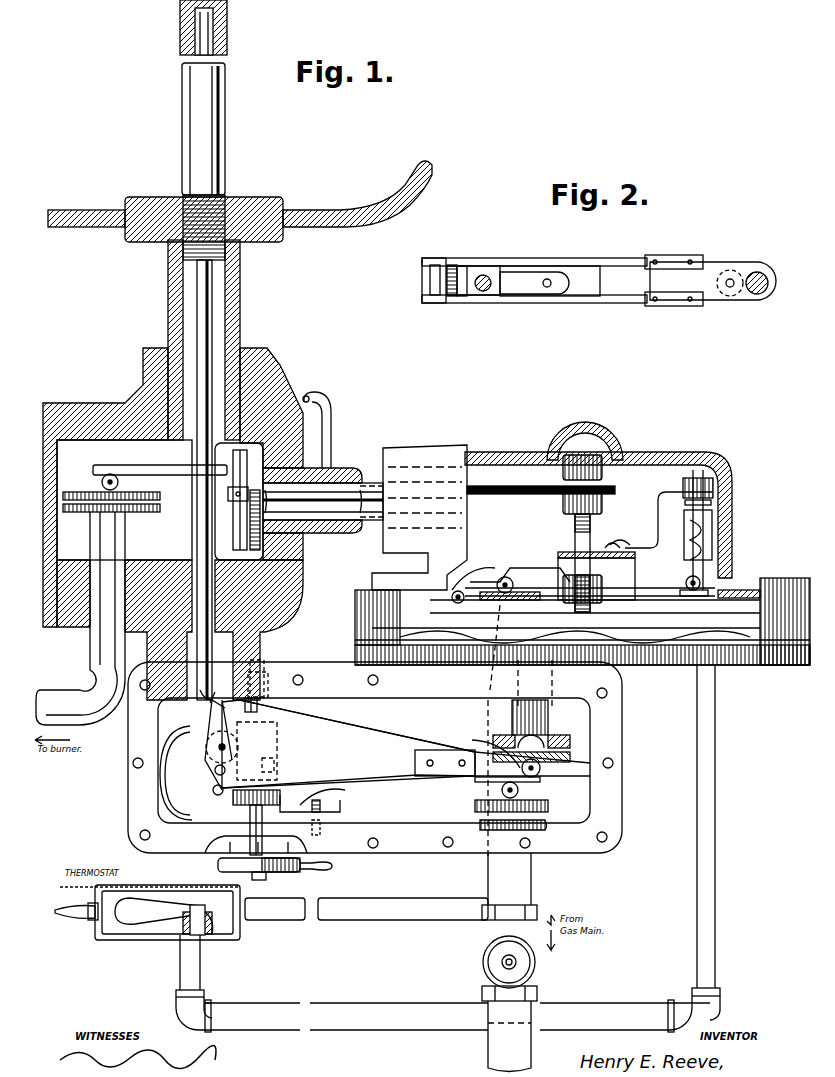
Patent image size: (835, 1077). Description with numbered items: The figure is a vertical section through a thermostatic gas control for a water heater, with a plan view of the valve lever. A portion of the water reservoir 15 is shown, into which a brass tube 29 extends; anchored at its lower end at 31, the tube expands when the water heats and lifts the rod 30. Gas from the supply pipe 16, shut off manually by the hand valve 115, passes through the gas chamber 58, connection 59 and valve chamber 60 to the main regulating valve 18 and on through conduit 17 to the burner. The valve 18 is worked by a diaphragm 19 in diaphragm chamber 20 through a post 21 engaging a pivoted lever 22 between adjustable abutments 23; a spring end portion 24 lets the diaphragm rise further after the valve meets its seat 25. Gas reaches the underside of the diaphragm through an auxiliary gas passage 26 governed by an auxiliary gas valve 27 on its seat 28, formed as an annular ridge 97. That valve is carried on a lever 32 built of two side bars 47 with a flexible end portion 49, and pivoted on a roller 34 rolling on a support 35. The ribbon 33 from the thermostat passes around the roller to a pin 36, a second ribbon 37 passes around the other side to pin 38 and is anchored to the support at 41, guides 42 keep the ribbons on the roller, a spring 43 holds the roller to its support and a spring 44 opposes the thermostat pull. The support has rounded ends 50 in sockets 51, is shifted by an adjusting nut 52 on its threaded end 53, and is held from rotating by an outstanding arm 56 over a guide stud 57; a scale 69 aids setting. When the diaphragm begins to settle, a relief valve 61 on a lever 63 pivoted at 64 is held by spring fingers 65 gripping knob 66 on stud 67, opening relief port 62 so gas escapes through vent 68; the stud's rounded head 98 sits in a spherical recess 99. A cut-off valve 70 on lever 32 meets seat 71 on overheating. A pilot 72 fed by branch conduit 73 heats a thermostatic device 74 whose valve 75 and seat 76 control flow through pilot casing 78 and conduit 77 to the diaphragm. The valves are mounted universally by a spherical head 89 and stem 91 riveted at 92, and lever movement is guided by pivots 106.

In FIG. 1, the water chamber or reservoir 15 is at (410, 185).
In FIG. 1, the gas supply pipe 16 is at (490, 1043).
In FIG. 1, the conduit to main burner 17 is at (90, 668).
In FIG. 1, the main regulating valve 18 is at (88, 495).
In FIG. 1, the diaphragm 19 is at (745, 630).
In FIG. 1, the diaphragm chamber 20 is at (640, 640).
In FIG. 1, the post 21 is at (575, 535).
In FIG. 1, the pivoted lever 22 is at (485, 486).
In FIG. 1, the adjustable abutments 23 is at (604, 475).
In FIG. 1, the spring end portion 24 is at (555, 458).
In FIG. 1, the valve seat 25 is at (160, 500).
In FIG. 1, the auxiliary gas passage 26 is at (525, 733).
In FIG. 1, the auxiliary gas valve 27 is at (545, 770).
In FIG. 1, the valve seat 28 is at (560, 735).
In FIG. 1, the tube 29 is at (190, 105).
In FIG. 1, the rod 30 is at (227, 40).
In FIG. 1, the anchorage 31 is at (225, 195).
In FIG. 1, the arm or lever 32 is at (310, 745).
In FIG. 2, the arm or lever 32 is at (520, 262).
In FIG. 1, the metallic tape or ribbon 33 is at (215, 705).
In FIG. 1, the roller 34 is at (226, 747).
In FIG. 2, the roller 34 is at (422, 284).
In FIG. 1, the support 35 is at (275, 760).
In FIG. 2, the support 35 is at (472, 275).
In FIG. 1, the pin 36 is at (215, 790).
In FIG. 1, the ribbon 37 is at (240, 770).
In FIG. 1, the pin 38 is at (262, 672).
In FIG. 2, the pin 38 is at (450, 296).
In FIG. 1, the ribbon anchorage 41 is at (235, 800).
In FIG. 1, the guides 42 is at (215, 770).
In FIG. 1, the spring 43 is at (165, 780).
In FIG. 1, the spring 44 is at (375, 757).
In FIG. 2, the side bars 47 is at (612, 258).
In FIG. 1, the flexible end portion 49 is at (485, 783).
In FIG. 2, the flexible end portion 49 is at (690, 298).
In FIG. 1, the rounded ends 50 is at (262, 707).
In FIG. 2, the rounded ends 50 is at (483, 292).
In FIG. 1, the sockets 51 is at (270, 685).
In FIG. 1, the adjusting nut 52 is at (320, 872).
In FIG. 1, the threaded end 53 is at (266, 880).
In FIG. 1, the outstanding arm 56 is at (320, 800).
In FIG. 2, the outstanding arm 56 is at (528, 288).
In FIG. 1, the guide stud 57 is at (320, 825).
In FIG. 1, the gas chamber 58 is at (490, 742).
In FIG. 1, the connection 59 is at (270, 628).
In FIG. 1, the valve chamber 60 is at (206, 501).
In FIG. 1, the relief valve 61 is at (522, 578).
In FIG. 1, the relief opening 62 is at (489, 649).
In FIG. 1, the lever 63 is at (545, 570).
In FIG. 1, the pivot 64 is at (462, 590).
In FIG. 1, the spring fingers 65 is at (712, 510).
In FIG. 1, the knob 66 is at (712, 535).
In FIG. 1, the stud 67 is at (648, 545).
In FIG. 1, the vent 68 is at (320, 392).
In FIG. 1, the scale 69 is at (222, 850).
In FIG. 1, the cut-off valve 70 is at (548, 805).
In FIG. 1, the valve seat 71 is at (545, 825).
In FIG. 1, the pilot 72 is at (85, 912).
In FIG. 1, the branch conduit 73 is at (378, 905).
In FIG. 1, the thermostatic device 74 is at (128, 925).
In FIG. 1, the valve 75 is at (198, 912).
In FIG. 1, the seat 76 is at (212, 930).
In FIG. 1, the conduit 77 is at (716, 826).
In FIG. 1, the pilot casing 78 is at (100, 933).
In FIG. 2, the spherical head 89 is at (768, 280).
In FIG. 2, the stem 91 is at (731, 279).
In FIG. 1, the rivet 92 is at (480, 745).
In FIG. 1, the annular ridge 97 is at (575, 758).
In FIG. 1, the rounded head 98 is at (684, 583).
In FIG. 1, the spherical recess 99 is at (735, 588).
In FIG. 1, the pivots 106 is at (300, 465).
In FIG. 1, the hand valve 115 is at (518, 965).